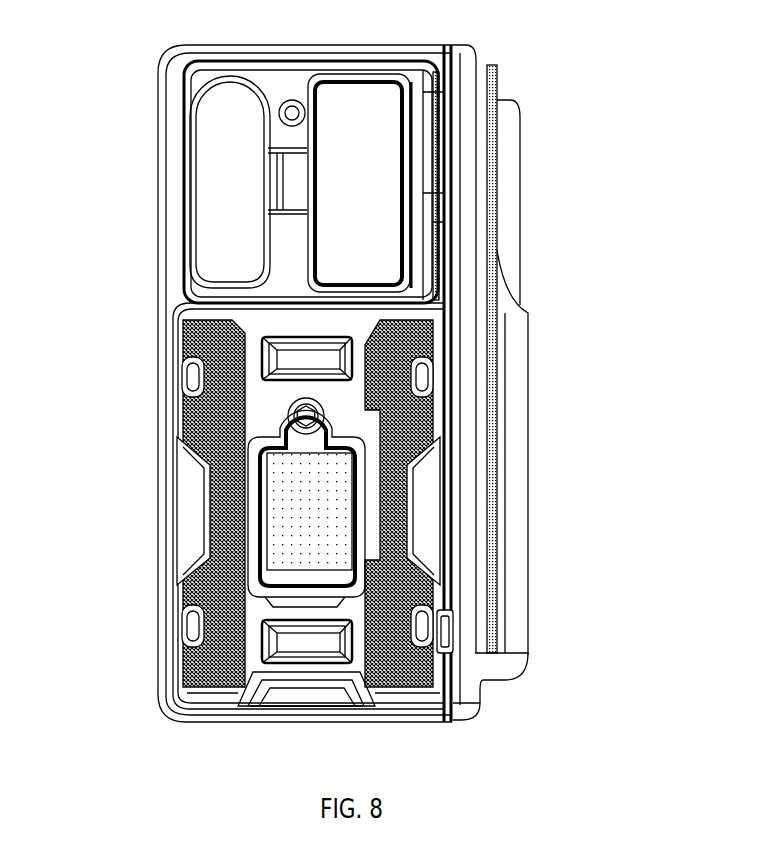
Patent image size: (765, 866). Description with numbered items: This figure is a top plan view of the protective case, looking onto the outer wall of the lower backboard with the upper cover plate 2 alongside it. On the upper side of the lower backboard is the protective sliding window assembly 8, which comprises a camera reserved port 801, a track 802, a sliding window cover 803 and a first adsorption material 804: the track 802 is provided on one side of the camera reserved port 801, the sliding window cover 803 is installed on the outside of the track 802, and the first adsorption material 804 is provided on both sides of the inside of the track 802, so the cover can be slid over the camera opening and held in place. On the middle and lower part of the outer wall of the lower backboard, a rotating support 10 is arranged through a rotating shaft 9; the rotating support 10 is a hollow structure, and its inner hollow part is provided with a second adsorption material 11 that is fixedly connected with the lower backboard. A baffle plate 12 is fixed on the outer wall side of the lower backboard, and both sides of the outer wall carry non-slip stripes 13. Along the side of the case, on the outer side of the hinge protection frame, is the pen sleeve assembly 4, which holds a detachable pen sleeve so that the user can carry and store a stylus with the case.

The upper cover plate 2 is at (263, 383).
The pen sleeve assembly 4 is at (533, 382).
The protective sliding window assembly 8 is at (398, 151).
The rotating shaft 9 is at (199, 395).
The rotating support 10 is at (251, 511).
The second adsorption material 11 is at (213, 508).
The baffle plate 12 is at (534, 609).
The non-slip stripes 13 is at (410, 481).
The camera reserved port 801 is at (155, 182).
The track 802 is at (173, 145).
The sliding window cover 803 is at (479, 183).
The first adsorption material 804 is at (475, 185).